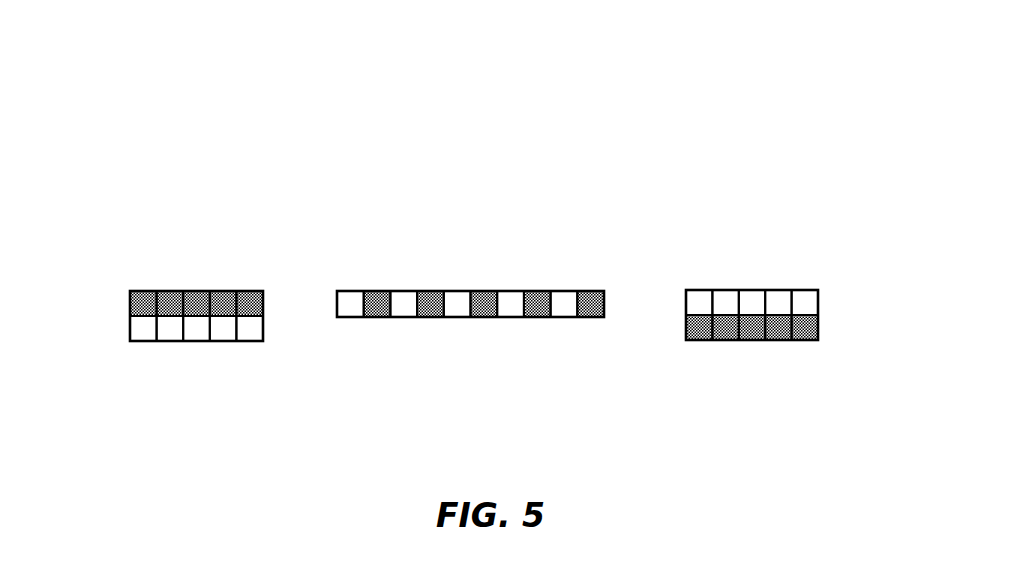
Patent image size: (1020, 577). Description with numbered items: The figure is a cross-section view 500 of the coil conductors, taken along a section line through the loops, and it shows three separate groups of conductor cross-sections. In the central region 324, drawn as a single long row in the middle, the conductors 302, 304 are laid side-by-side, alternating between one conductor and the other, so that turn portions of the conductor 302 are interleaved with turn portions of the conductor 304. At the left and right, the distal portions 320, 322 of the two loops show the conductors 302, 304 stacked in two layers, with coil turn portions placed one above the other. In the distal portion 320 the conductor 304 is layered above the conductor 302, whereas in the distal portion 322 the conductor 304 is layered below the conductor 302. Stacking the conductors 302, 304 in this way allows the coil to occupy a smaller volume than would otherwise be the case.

The cross-section view 500 is at (818, 73).
The distal portion 320 is at (198, 211).
The distal portion 322 is at (727, 397).
The central region 324 is at (457, 212).
The conductor 302 is at (249, 341).
The conductor 304 is at (248, 291).